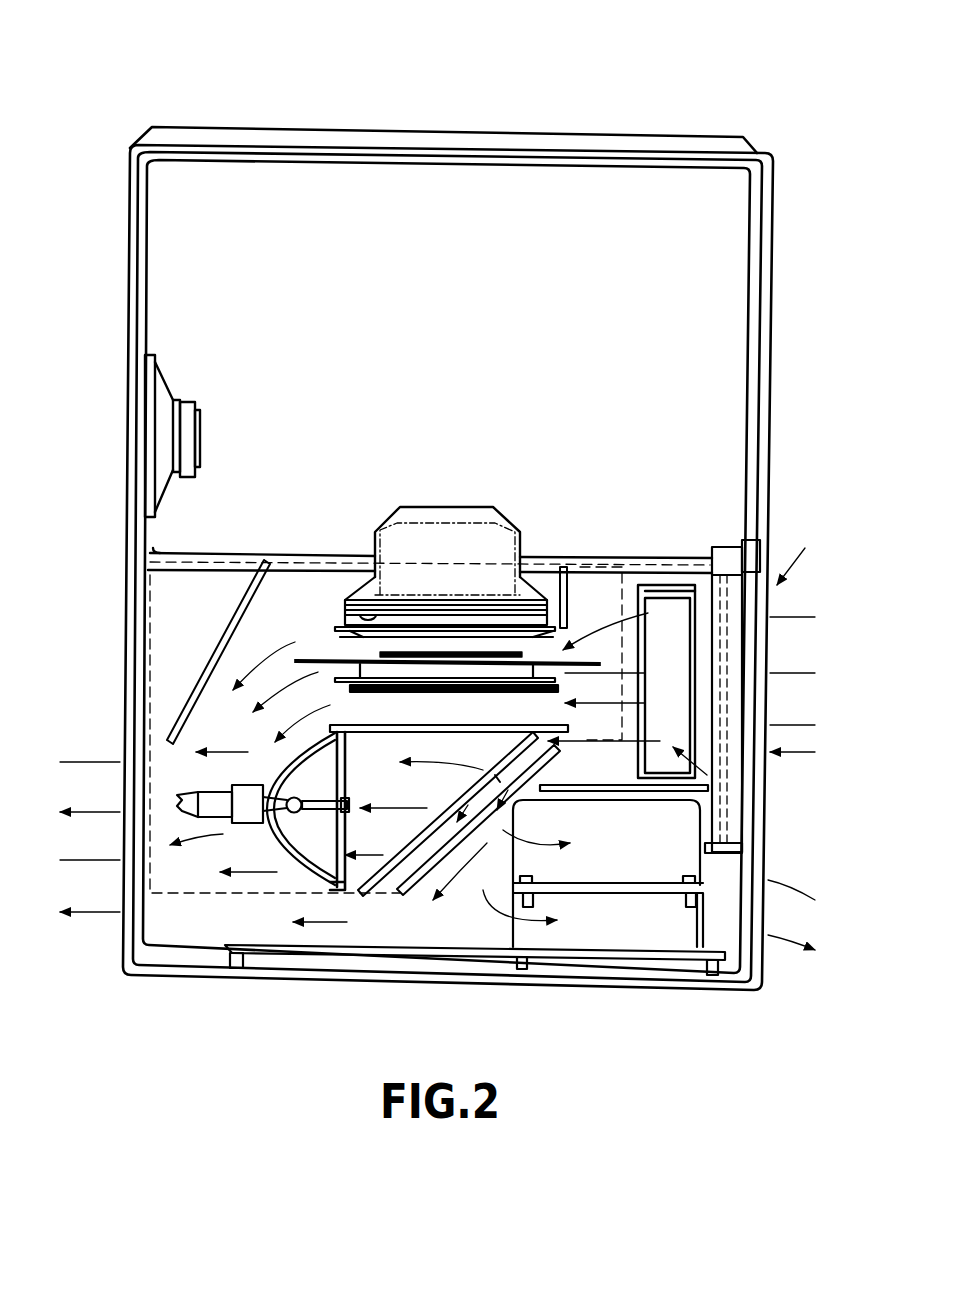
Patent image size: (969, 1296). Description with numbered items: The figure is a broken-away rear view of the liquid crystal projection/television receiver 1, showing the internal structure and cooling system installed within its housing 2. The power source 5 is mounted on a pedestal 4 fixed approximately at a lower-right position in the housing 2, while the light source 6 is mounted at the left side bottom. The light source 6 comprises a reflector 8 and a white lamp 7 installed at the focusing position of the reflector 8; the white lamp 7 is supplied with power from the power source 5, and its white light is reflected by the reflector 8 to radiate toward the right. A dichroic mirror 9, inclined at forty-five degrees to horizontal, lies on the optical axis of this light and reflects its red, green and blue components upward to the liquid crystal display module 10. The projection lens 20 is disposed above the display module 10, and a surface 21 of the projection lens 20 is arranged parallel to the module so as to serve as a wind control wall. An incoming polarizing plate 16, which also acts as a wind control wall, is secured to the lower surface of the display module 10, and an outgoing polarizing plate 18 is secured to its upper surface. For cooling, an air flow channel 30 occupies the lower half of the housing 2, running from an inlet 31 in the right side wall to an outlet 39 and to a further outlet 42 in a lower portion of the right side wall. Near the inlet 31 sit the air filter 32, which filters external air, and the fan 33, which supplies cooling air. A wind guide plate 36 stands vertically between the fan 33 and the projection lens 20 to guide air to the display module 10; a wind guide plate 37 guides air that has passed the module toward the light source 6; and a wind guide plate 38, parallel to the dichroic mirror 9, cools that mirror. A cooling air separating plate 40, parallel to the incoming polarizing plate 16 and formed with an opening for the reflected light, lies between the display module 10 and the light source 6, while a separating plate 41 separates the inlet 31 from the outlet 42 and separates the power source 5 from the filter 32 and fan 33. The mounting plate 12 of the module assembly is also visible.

The liquid crystal projection/television receiver 1 is at (437, 115).
The housing 2 is at (677, 128).
The pedestal 4 is at (703, 913).
The power source 5 is at (605, 867).
The light source 6 is at (258, 840).
The white lamp 7 is at (128, 802).
The reflector 8 is at (307, 873).
The dichroic mirror 9 is at (392, 870).
The liquid crystal display module 10 is at (515, 645).
The mounting plate 12 is at (408, 650).
The incoming polarizing plate 16 is at (322, 855).
The outgoing polarizing plate 18 is at (258, 560).
The projection lens 20 is at (438, 597).
The lens surface 21 is at (360, 605).
The air flow channel 30 is at (600, 590).
The inlet 31 is at (758, 645).
The air filter 32 is at (723, 700).
The fan 33 is at (668, 610).
The wind guide plate 36 is at (570, 578).
The wind guide plate 37 is at (217, 647).
The wind guide plate 38 is at (422, 880).
The outlet 39 is at (125, 885).
The cooling air separating plate 40 is at (478, 727).
The separating plate 41 is at (660, 788).
The outlet 42 is at (760, 943).